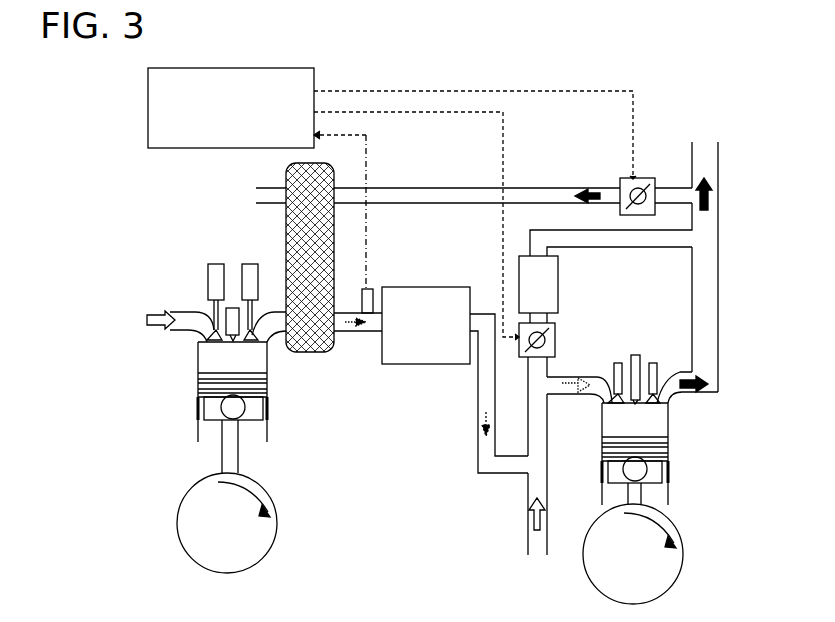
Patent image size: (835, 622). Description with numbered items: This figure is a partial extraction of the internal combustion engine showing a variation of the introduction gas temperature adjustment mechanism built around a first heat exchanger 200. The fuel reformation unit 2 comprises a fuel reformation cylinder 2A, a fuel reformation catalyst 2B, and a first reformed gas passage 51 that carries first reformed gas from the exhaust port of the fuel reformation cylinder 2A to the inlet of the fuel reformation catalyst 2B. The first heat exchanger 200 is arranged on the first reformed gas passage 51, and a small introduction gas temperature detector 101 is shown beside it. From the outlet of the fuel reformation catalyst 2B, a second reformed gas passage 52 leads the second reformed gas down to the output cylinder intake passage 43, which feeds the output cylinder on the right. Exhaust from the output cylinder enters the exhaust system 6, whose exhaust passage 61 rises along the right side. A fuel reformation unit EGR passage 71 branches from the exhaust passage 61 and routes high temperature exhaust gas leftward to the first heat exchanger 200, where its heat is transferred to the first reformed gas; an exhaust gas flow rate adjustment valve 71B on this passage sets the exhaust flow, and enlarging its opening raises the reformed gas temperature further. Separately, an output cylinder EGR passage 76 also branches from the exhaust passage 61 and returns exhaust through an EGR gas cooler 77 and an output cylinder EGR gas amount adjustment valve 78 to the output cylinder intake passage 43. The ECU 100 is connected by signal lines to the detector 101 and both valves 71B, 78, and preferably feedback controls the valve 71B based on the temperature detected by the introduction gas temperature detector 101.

The ECU 100 is at (148, 100).
The first heat exchanger 200 is at (286, 225).
The fuel reformation unit EGR passage 71 is at (545, 187).
The exhaust gas flow rate adjustment valve 71B is at (642, 178).
The exhaust system 6 is at (653, 267).
The exhaust passage 61 is at (712, 276).
The output cylinder EGR passage 76 is at (637, 248).
The EGR gas cooler 77 is at (558, 292).
The output cylinder EGR gas amount adjustment valve 78 is at (556, 340).
The first reformed gas passage 51 is at (357, 312).
The introduction gas temperature detector 101 is at (370, 290).
The second reformed gas passage 52 is at (477, 393).
The output cylinder intake passage 43 is at (527, 536).
The fuel reformation cylinder 2A is at (272, 406).
The fuel reformation catalyst 2B is at (425, 372).
The fuel reformation unit 2 is at (432, 434).